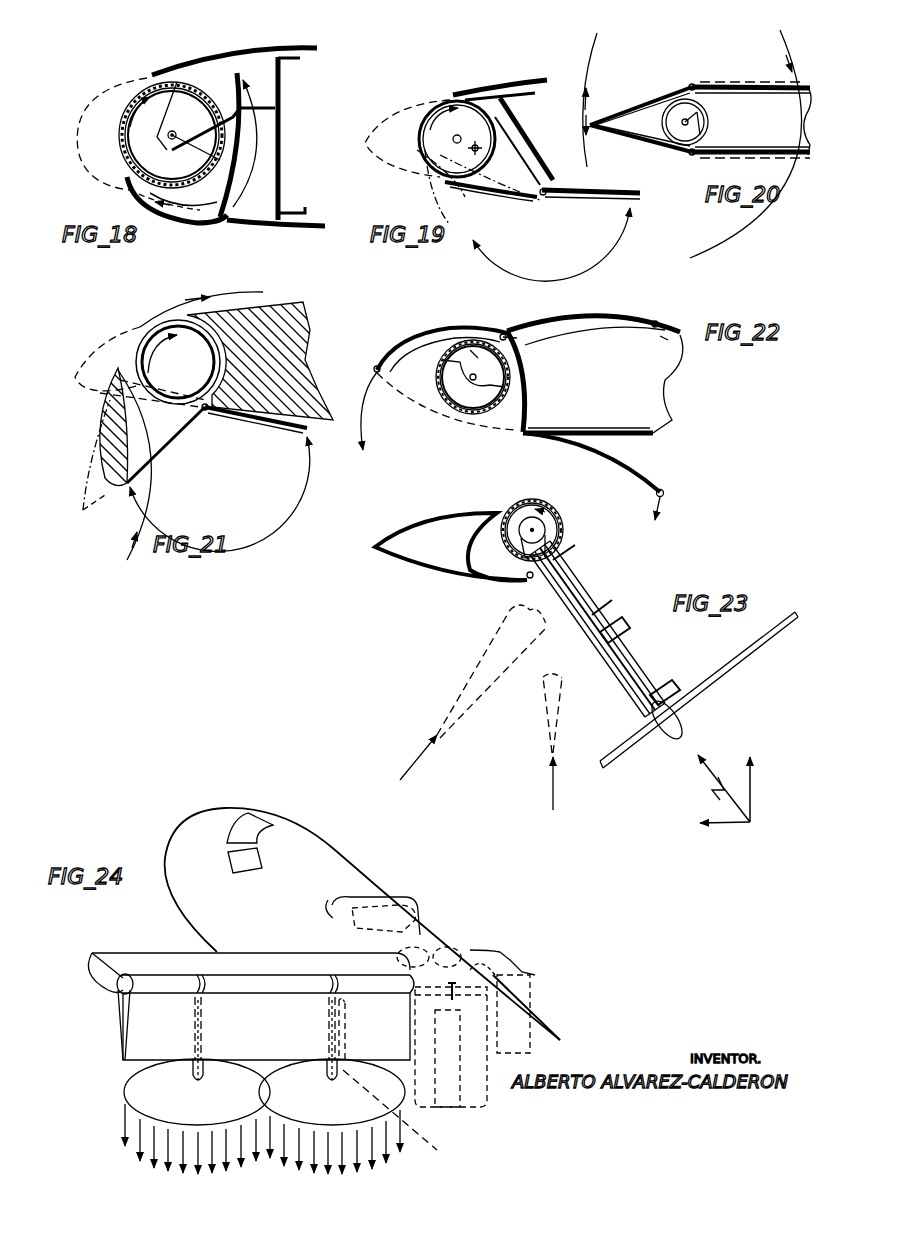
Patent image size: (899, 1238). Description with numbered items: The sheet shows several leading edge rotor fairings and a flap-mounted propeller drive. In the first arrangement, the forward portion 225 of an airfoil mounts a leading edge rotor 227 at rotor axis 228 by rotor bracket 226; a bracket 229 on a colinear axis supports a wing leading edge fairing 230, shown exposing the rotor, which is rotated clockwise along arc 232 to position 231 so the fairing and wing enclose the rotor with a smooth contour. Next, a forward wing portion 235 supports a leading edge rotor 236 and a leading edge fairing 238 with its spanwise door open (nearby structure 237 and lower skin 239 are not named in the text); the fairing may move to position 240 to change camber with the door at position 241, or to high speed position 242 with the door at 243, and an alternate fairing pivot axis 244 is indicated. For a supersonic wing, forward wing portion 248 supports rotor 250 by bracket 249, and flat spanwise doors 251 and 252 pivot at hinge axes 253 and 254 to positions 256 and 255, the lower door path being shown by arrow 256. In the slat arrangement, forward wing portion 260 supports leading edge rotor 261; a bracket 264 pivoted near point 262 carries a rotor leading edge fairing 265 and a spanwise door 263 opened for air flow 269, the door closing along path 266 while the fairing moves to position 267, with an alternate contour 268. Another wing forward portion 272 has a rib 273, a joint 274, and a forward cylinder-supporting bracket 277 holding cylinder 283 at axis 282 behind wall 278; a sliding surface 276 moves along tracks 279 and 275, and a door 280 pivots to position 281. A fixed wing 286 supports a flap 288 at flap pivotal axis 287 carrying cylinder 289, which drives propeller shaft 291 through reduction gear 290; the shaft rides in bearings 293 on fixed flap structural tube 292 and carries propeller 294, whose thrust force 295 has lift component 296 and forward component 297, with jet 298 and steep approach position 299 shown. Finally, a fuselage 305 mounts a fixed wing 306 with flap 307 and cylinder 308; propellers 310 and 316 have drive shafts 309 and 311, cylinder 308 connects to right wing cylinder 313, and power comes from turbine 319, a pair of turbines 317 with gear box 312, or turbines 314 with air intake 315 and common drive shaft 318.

In FIG. 18, the forward portion of airfoil 225 is at (237, 54).
In FIG. 18, the rotor bracket 226 is at (165, 88).
In FIG. 18, the leading edge rotor 227 is at (123, 100).
In FIG. 18, the rotor axis 228 is at (172, 131).
In FIG. 18, the bracket 229 is at (142, 147).
In FIG. 18, the wing leading edge fairing 230 is at (203, 220).
In FIG. 18, the fairing high speed position 231 is at (123, 190).
In FIG. 18, the arc 232 is at (267, 127).
In FIG. 19, the forward wing portion 235 is at (525, 57).
In FIG. 19, the leading edge rotor 236 is at (457, 135).
In FIG. 19, the front spar 237 is at (420, 127).
In FIG. 19, the leading edge fairing 238 is at (500, 200).
In FIG. 19, the lower wing skin 239 is at (590, 202).
In FIG. 19, the fairing second high lift position 240 is at (430, 210).
In FIG. 19, the spanwise door second position 241 is at (483, 233).
In FIG. 19, the fairing high speed position 242 is at (393, 175).
In FIG. 19, the spanwise door high speed position 243 is at (523, 208).
In FIG. 19, the alternate fairing pivot axis 244 is at (480, 148).
In FIG. 20, the forward wing portion 248 is at (747, 92).
In FIG. 20, the bracket 249 is at (693, 107).
In FIG. 20, the rotor 250 is at (683, 95).
In FIG. 20, the upper flat spanwise door 251 is at (640, 108).
In FIG. 20, the lower flat spanwise door 252 is at (607, 135).
In FIG. 20, the upper door hinge axis 253 is at (692, 84).
In FIG. 20, the lower door hinge axis 254 is at (693, 157).
In FIG. 20, the lower door high lift position 255 is at (767, 157).
In FIG. 20, the upper door high lift position and lower door path arrow 256 is at (765, 82).
In FIG. 21, the forward wing portion 260 is at (293, 330).
In FIG. 21, the leading edge rotor 261 is at (140, 350).
In FIG. 21, the pivot 262 is at (205, 412).
In FIG. 21, the spanwise door 263 is at (270, 423).
In FIG. 21, the bracket 264 is at (167, 453).
In FIG. 21, the rotor leading edge fairing 265 is at (93, 443).
In FIG. 21, the path 266 is at (230, 517).
In FIG. 21, the fairing high speed position 267 is at (95, 352).
In FIG. 21, the alternate fairing contour 268 is at (97, 517).
In FIG. 21, the air flow arrow 269 is at (172, 308).
In FIG. 22, the wing forward portion 272 is at (658, 322).
In FIG. 22, the rib 273 is at (650, 368).
In FIG. 22, the skin joint 274 is at (665, 338).
In FIG. 22, the track 275 is at (592, 335).
In FIG. 22, the sliding surface 276 is at (593, 320).
In FIG. 22, the forward cylinder-supporting bracket 277 is at (497, 330).
In FIG. 22, the front spar wall 278 is at (517, 340).
In FIG. 22, the track 279 is at (430, 342).
In FIG. 22, the door 280 is at (657, 483).
In FIG. 22, the door closed position 281 is at (447, 418).
In FIG. 22, the axis 282 is at (472, 378).
In FIG. 22, the cylinder 283 is at (443, 362).
In FIG. 23, the fixed wing 286 is at (442, 518).
In FIG. 23, the flap pivotal axis 287 is at (530, 580).
In FIG. 23, the flap 288 is at (560, 567).
In FIG. 23, the cylinder 289 is at (552, 510).
In FIG. 23, the reduction gear 290 is at (543, 530).
In FIG. 23, the propeller shaft 291 is at (613, 602).
In FIG. 23, the fixed flap structural tube 292 is at (650, 667).
In FIG. 23, the bearings 293 is at (580, 575).
In FIG. 23, the propeller 294 is at (710, 692).
In FIG. 23, the propeller thrust force 295 is at (713, 773).
In FIG. 23, the direct lift component 296 is at (750, 807).
In FIG. 23, the forward component 297 is at (727, 825).
In FIG. 23, the vertical jet 298 is at (547, 727).
In FIG. 23, the steep approach position 299 is at (460, 698).
In FIG. 24, the fuselage 305 is at (330, 855).
In FIG. 24, the fixed wing 306 is at (130, 953).
In FIG. 24, the flap 307 is at (122, 1017).
In FIG. 24, the cylinder 308 is at (213, 973).
In FIG. 24, the propeller drive shaft 309 is at (195, 1028).
In FIG. 24, the propeller 310 is at (125, 1092).
In FIG. 24, the propeller drive shaft 311 is at (325, 1030).
In FIG. 24, the gear box 312 is at (480, 948).
In FIG. 24, the cylinder on right wing 313 is at (520, 973).
In FIG. 24, the pair of turbines 314 is at (420, 920).
In FIG. 24, the air intake 315 is at (383, 895).
In FIG. 24, the propeller 316 is at (418, 1105).
In FIG. 24, the pair of turbines 317 is at (480, 1105).
In FIG. 24, the common drive shaft 318 is at (440, 945).
In FIG. 24, the turbine 319 is at (320, 1022).